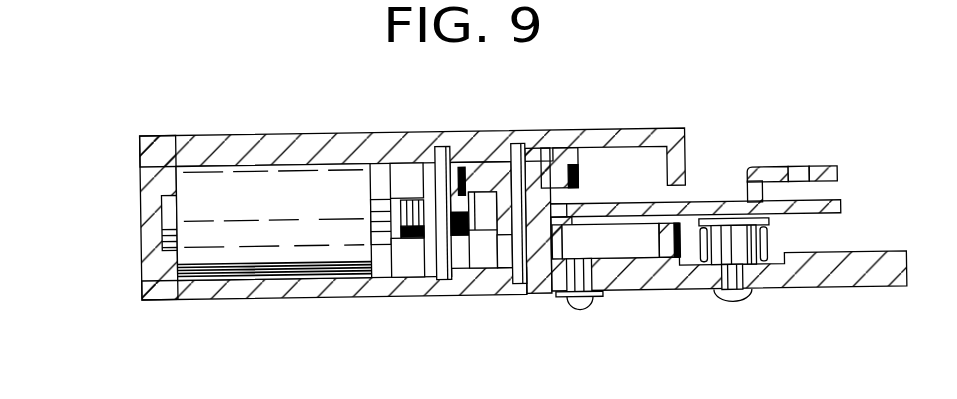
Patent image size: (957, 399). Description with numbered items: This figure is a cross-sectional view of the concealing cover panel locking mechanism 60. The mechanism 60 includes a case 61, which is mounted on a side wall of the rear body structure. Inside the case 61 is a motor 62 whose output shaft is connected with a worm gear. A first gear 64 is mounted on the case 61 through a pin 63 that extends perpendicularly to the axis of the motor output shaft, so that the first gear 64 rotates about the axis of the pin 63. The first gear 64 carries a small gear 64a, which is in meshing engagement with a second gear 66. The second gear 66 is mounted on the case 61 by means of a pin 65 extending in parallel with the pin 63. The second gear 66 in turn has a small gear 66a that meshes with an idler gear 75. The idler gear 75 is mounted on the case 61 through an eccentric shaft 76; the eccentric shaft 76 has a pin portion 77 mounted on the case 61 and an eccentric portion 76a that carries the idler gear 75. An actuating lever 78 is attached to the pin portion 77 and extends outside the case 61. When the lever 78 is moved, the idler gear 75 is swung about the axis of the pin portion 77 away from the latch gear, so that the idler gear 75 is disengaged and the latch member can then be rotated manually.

The concealing cover panel locking mechanism 60 is at (302, 118).
The case 61 is at (142, 186).
The motor 62 is at (293, 263).
The pin 63 is at (443, 136).
The first gear 64 is at (485, 253).
The small gear 64a is at (478, 136).
The pin 65 is at (523, 283).
The second gear 66 is at (567, 136).
The small gear 66a is at (500, 247).
The idler gear 75 is at (688, 267).
The eccentric shaft 76 is at (640, 253).
The eccentric portion 76a is at (623, 220).
The pin portion 77 is at (593, 292).
The actuating lever 78 is at (821, 165).